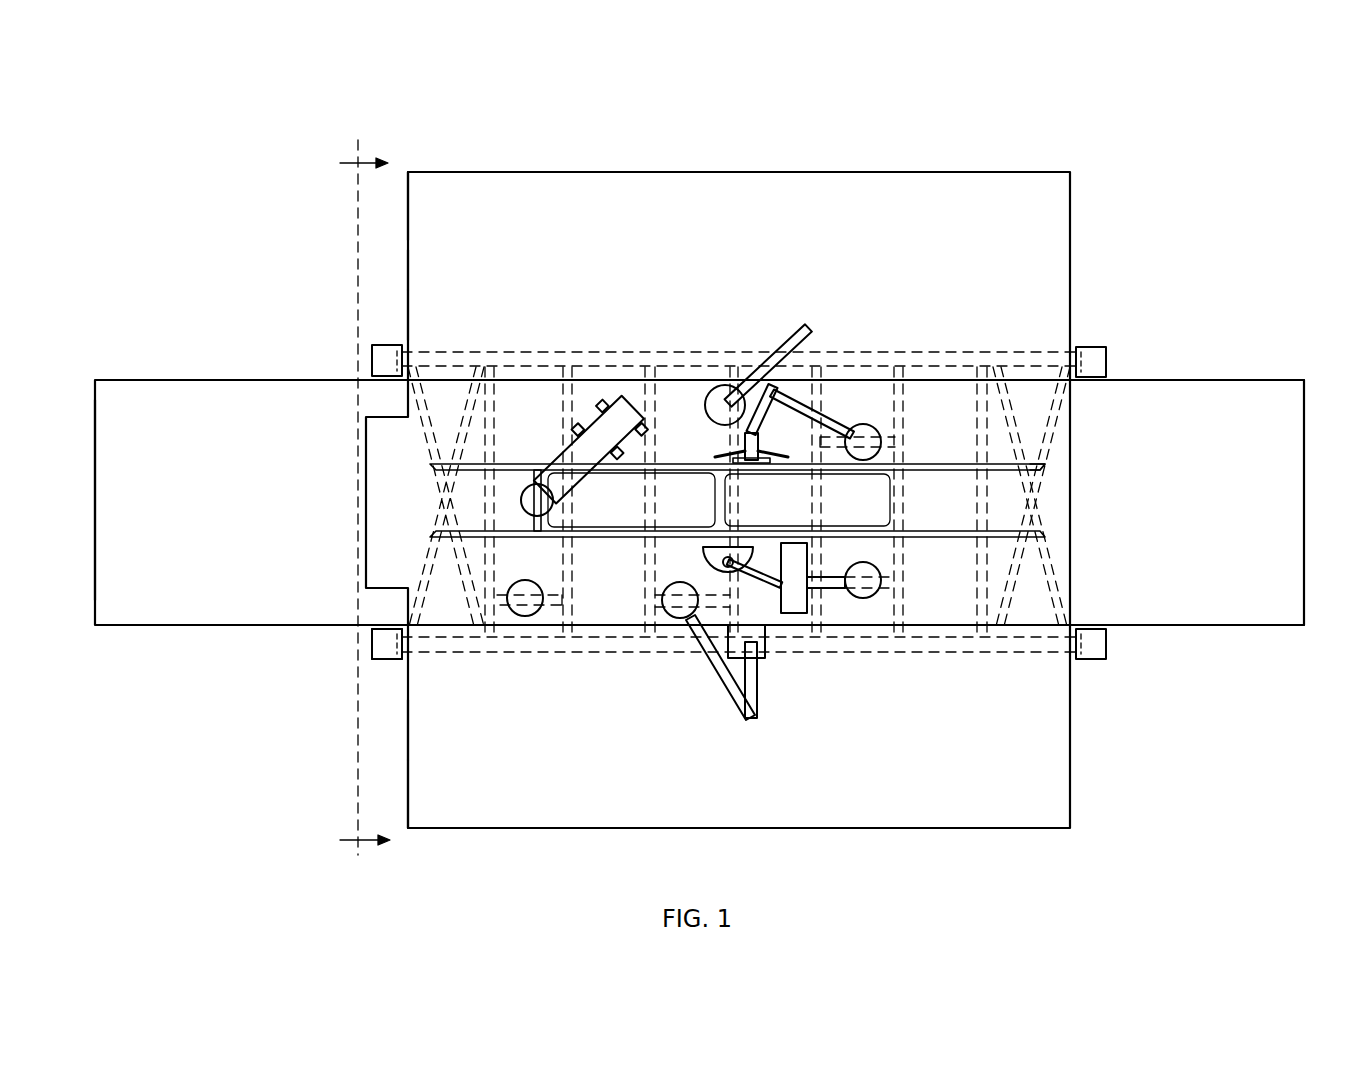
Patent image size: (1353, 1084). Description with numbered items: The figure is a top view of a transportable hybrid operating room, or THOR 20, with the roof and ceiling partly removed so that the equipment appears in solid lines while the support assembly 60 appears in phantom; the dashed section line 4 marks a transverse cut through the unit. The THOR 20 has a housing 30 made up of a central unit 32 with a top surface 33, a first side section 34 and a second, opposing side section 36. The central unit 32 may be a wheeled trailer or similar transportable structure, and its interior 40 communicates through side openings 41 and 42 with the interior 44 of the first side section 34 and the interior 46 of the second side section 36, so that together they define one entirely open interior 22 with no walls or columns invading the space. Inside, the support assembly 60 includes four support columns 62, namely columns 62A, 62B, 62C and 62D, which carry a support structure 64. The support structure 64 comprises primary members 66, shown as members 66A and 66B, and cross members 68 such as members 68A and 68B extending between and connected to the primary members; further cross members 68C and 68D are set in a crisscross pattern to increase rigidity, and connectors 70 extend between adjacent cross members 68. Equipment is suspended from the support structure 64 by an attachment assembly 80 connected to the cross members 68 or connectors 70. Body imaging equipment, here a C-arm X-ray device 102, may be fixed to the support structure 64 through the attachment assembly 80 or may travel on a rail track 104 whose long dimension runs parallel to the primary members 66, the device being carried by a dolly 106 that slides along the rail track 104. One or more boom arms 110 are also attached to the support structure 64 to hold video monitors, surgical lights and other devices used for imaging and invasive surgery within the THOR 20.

The section line 4 is at (365, 503).
The THOR 20 is at (897, 137).
The interior 22 is at (1072, 240).
The housing 30 is at (407, 228).
The central unit 32 is at (148, 380).
The top surface 33 is at (113, 430).
The first side section 34 is at (408, 265).
The second side section 36 is at (407, 730).
The interior 40 is at (242, 383).
The side opening 41 is at (1072, 393).
The side opening 42 is at (1070, 662).
The interior 44 is at (412, 306).
The interior 46 is at (409, 783).
The support assembly 60 is at (893, 353).
The support columns 62 is at (372, 644).
The column 62A is at (385, 378).
The column 62B is at (1093, 350).
The column 62C is at (387, 660).
The column 62D is at (1103, 659).
The support structure 64 is at (920, 350).
The primary members 66 is at (736, 353).
The primary member 66A is at (675, 358).
The primary member 66B is at (820, 642).
The cross members 68 is at (905, 607).
The cross member 68A is at (910, 585).
The cross member 68B is at (982, 578).
The cross member 68C is at (1018, 436).
The cross member 68D is at (1045, 455).
The connectors 70 is at (548, 605).
The attachment assembly 80 is at (863, 424).
The C-arm X-ray device 102 is at (600, 428).
The rail track 104 is at (473, 540).
The dolly 106 is at (521, 500).
The boom arms 110 is at (728, 690).